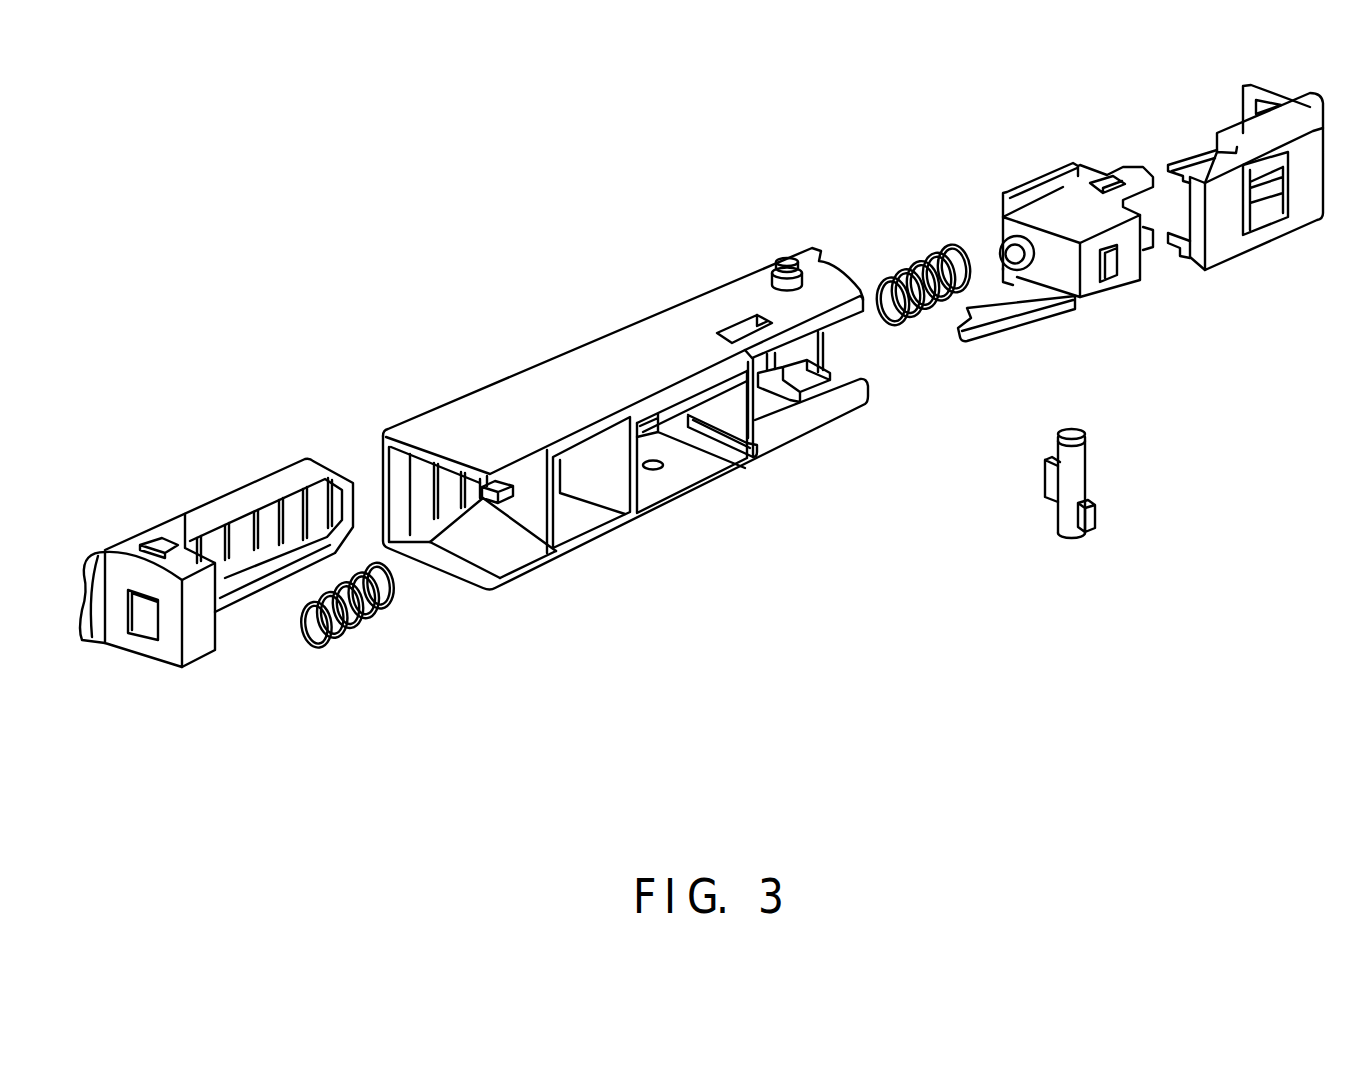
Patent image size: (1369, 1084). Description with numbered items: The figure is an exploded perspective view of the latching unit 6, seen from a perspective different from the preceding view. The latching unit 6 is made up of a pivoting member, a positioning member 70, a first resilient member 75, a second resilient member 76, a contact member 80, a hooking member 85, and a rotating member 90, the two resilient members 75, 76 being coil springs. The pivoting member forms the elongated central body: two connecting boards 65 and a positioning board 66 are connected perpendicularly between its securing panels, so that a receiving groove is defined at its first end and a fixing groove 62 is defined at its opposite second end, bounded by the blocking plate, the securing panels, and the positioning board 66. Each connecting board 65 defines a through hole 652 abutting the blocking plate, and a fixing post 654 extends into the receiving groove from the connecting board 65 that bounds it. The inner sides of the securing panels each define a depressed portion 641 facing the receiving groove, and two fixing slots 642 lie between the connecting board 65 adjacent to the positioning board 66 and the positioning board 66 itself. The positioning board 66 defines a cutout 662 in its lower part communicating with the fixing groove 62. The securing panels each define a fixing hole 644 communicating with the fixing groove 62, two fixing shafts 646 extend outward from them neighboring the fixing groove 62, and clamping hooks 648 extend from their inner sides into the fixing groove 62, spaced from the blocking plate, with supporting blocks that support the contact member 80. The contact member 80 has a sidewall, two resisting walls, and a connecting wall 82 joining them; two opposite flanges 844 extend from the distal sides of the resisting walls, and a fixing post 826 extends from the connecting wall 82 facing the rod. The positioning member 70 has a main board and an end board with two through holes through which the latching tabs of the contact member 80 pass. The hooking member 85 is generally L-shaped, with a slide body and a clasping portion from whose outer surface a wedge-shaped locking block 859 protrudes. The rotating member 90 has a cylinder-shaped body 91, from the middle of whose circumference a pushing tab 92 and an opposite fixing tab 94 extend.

The latching unit 6 is at (488, 208).
The fixing groove 62 is at (837, 350).
The connecting boards 65 is at (507, 563).
The depressed portion 641 is at (500, 558).
The fixing post 654 is at (490, 500).
The through hole 652 is at (483, 493).
The fixing hole 644 is at (736, 333).
The fixing shafts 646 is at (785, 258).
The fixing slots 642 is at (657, 465).
The cutout 662 is at (714, 432).
The positioning board 66 is at (727, 407).
The clamping hooks 648 is at (807, 377).
The hooking member 85 is at (202, 481).
The locking block 859 is at (137, 618).
The first resilient member 75 is at (373, 617).
The second resilient member 76 is at (902, 270).
The contact member 80 is at (1022, 148).
The flanges 844 is at (1053, 178).
The fixing post 826 is at (1000, 250).
The connecting wall 82 is at (1057, 272).
The positioning member 70 is at (1232, 238).
The rotating member 90 is at (1106, 480).
The body 91 is at (1075, 453).
The fixing tab 94 is at (1050, 482).
The pushing tab 92 is at (1083, 518).